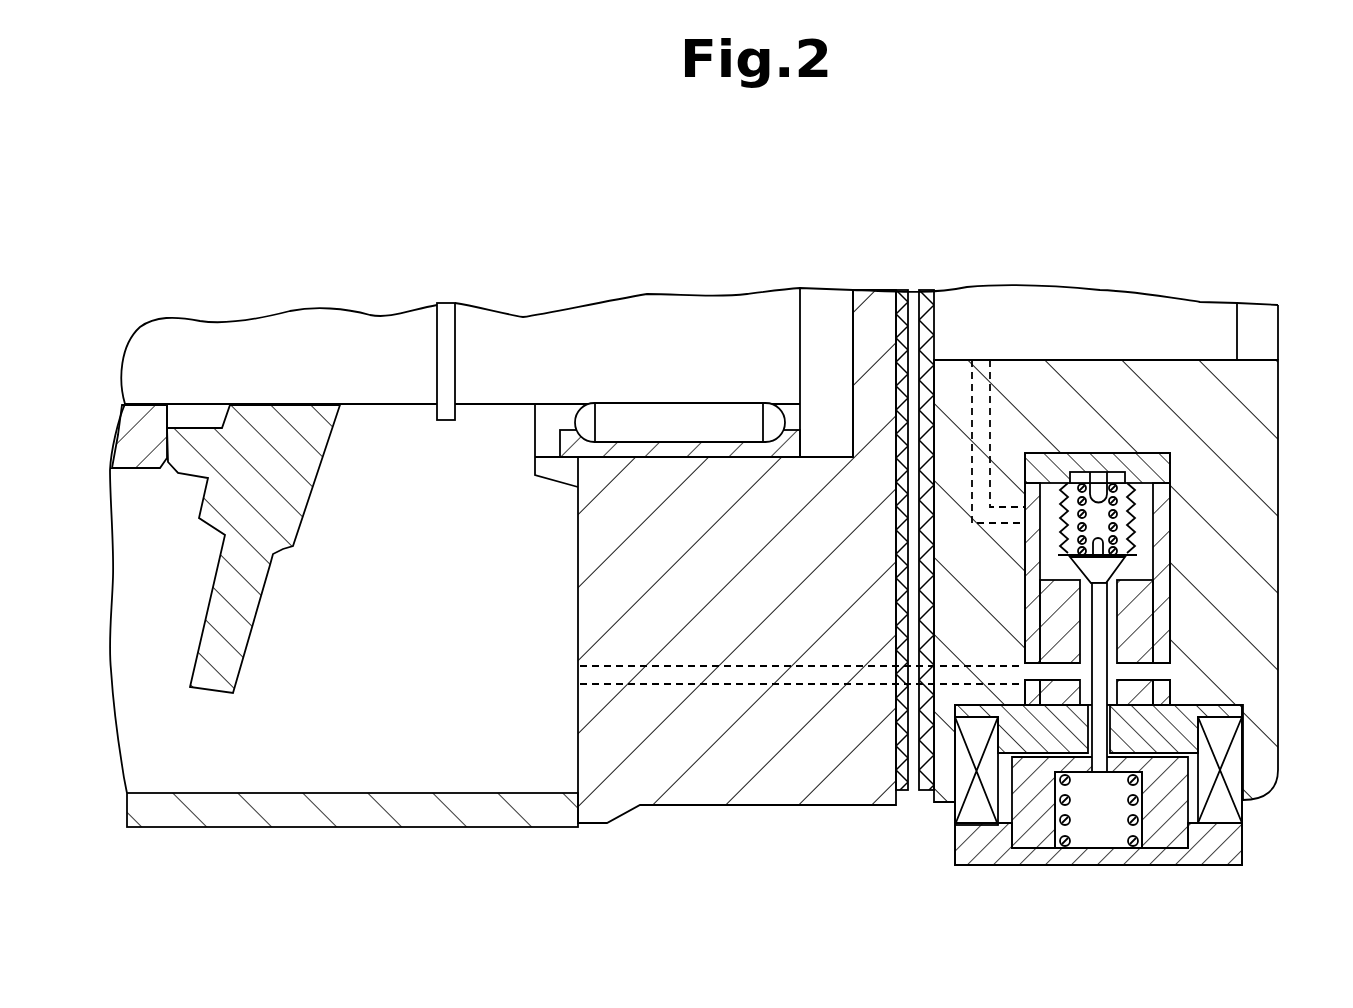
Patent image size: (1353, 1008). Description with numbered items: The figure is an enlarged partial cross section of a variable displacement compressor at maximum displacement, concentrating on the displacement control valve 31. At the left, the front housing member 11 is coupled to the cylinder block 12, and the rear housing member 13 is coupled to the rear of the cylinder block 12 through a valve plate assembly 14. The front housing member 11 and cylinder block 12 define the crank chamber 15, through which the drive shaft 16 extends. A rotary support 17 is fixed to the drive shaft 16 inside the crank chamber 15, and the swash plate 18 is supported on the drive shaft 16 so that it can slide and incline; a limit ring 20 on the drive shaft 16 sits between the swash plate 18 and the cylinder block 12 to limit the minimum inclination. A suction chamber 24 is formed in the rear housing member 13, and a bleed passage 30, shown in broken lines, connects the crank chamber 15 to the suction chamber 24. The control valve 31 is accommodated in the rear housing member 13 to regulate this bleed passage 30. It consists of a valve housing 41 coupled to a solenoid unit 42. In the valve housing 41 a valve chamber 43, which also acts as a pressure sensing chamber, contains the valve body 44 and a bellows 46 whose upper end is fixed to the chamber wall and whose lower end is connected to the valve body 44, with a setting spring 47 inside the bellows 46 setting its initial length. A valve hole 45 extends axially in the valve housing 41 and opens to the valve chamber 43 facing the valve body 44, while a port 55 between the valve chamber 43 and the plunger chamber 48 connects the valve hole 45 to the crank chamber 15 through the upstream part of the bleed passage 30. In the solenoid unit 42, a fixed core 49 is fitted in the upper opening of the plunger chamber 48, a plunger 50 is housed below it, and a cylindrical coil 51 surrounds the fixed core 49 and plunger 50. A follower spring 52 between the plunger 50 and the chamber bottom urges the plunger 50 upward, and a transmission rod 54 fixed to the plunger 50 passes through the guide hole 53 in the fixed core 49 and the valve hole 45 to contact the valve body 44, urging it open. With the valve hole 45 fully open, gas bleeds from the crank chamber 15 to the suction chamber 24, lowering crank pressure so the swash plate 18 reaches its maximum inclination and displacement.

The front housing member 11 is at (348, 827).
The cylinder block 12 is at (685, 805).
The rear housing member 13 is at (1283, 375).
The valve plate assembly 14 is at (917, 790).
The crank chamber 15 is at (407, 700).
The drive shaft 16 is at (387, 405).
The rotary support 17 is at (143, 470).
The swash plate 18 is at (188, 693).
The limit ring 20 is at (437, 421).
The suction chamber 24 is at (1093, 338).
The bleed passage 30 is at (990, 410).
The displacement control valve 31 is at (942, 862).
The valve housing 41 is at (1172, 482).
The solenoid unit 42 is at (1244, 706).
The valve chamber 43 is at (1147, 520).
The valve body 44 is at (1124, 560).
The valve hole 45 is at (1110, 603).
The bellows 46 is at (1045, 538).
The setting spring 47 is at (1042, 582).
The plunger chamber 48 is at (1178, 843).
The fixed core 49 is at (1167, 733).
The plunger 50 is at (1033, 825).
The coil 51 is at (1233, 813).
The follower spring 52 is at (1078, 825).
The guide hole 53 is at (1102, 727).
The transmission rod 54 is at (1090, 632).
The port 55 is at (1033, 673).